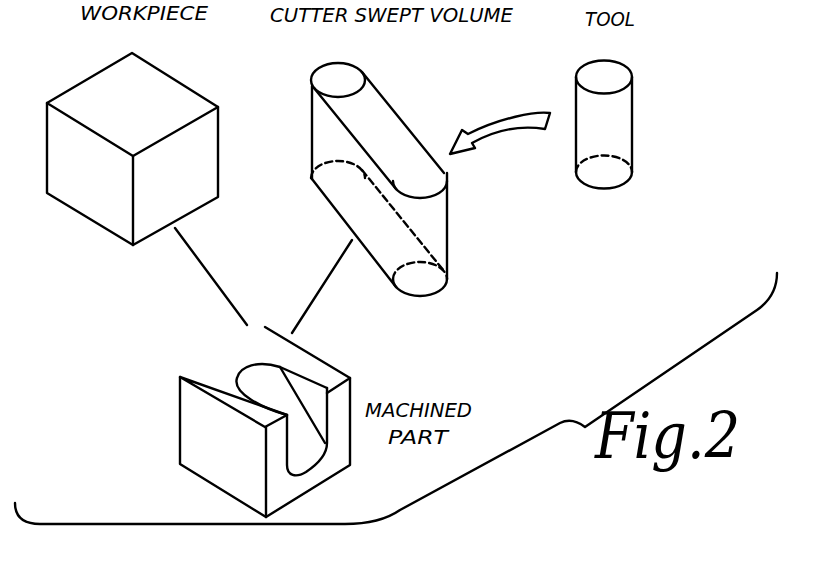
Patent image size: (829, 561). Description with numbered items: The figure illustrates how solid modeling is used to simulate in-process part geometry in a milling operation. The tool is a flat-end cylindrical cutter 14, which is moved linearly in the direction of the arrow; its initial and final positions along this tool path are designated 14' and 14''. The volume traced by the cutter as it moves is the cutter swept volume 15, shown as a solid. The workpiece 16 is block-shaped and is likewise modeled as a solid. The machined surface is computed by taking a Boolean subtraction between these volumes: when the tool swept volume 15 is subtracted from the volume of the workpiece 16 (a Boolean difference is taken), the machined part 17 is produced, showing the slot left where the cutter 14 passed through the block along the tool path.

The cutter 14 is at (632, 121).
The initial position of the tool 14' is at (313, 80).
The final position of the tool 14'' is at (447, 284).
The cutter swept volume 15 is at (381, 185).
The workpiece 16 is at (96, 80).
The machined part 17 is at (208, 365).